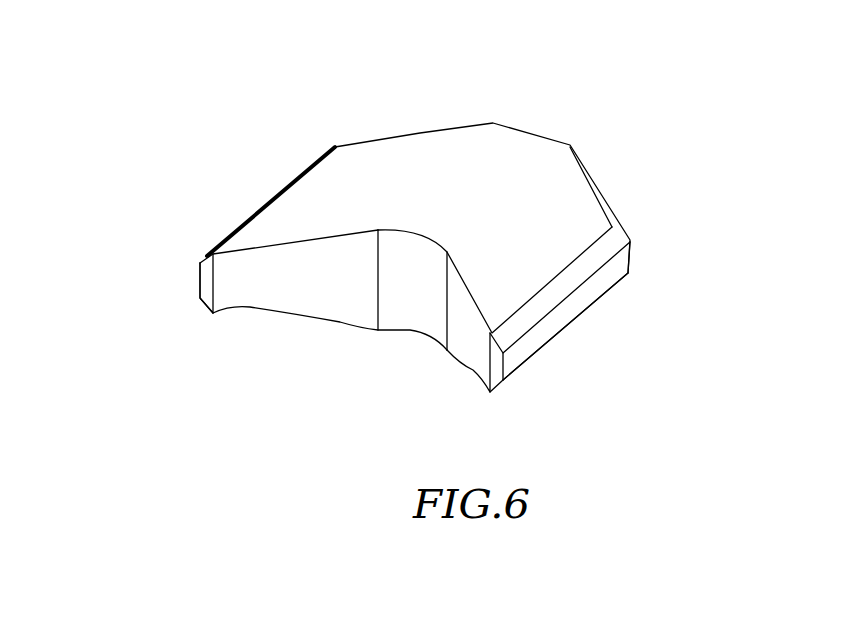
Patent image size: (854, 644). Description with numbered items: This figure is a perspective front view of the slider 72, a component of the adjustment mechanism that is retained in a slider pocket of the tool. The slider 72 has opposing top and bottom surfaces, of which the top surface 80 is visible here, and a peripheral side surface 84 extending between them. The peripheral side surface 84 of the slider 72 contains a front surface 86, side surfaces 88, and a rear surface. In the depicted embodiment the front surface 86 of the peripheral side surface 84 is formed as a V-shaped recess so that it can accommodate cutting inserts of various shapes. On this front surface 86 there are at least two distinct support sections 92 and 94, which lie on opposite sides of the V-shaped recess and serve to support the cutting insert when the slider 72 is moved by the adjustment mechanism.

The slider 72 is at (257, 108).
The top surface 80 is at (392, 185).
The peripheral side surface 84 is at (547, 328).
The front surface 86 is at (245, 273).
The side surfaces 88 is at (607, 277).
The support section 92 is at (325, 288).
The support section 94 is at (473, 335).